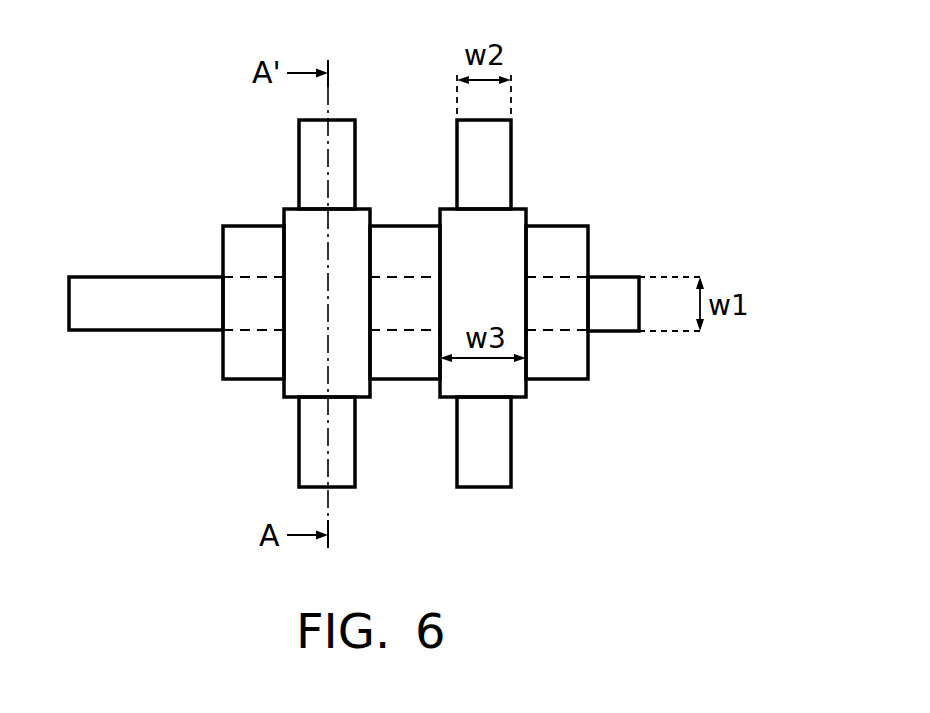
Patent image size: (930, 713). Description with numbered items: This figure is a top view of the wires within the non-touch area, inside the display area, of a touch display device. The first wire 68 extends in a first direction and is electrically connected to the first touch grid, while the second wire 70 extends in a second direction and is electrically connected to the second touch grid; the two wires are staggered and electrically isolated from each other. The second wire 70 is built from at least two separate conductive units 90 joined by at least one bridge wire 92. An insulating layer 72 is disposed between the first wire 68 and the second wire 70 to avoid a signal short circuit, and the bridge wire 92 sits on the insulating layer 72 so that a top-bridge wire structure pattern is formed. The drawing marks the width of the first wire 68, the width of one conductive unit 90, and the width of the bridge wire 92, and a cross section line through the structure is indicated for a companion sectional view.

The first wire 68 is at (620, 290).
The second wire 70 is at (742, 3).
The insulating layer 72 is at (558, 238).
The separate conductive units 90 is at (308, 137).
The bridge wire 92 is at (302, 226).